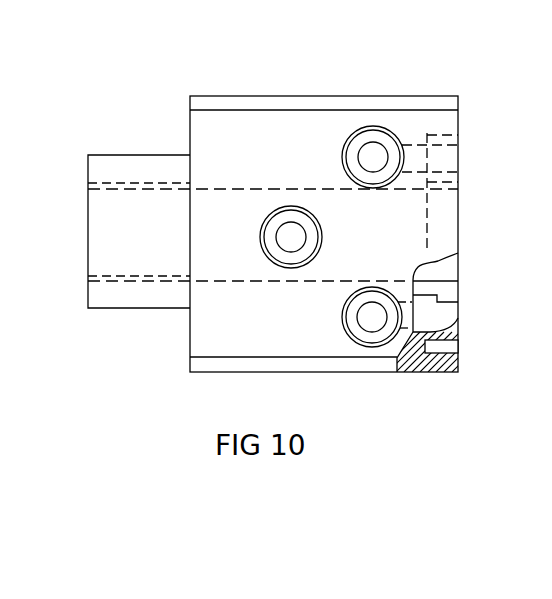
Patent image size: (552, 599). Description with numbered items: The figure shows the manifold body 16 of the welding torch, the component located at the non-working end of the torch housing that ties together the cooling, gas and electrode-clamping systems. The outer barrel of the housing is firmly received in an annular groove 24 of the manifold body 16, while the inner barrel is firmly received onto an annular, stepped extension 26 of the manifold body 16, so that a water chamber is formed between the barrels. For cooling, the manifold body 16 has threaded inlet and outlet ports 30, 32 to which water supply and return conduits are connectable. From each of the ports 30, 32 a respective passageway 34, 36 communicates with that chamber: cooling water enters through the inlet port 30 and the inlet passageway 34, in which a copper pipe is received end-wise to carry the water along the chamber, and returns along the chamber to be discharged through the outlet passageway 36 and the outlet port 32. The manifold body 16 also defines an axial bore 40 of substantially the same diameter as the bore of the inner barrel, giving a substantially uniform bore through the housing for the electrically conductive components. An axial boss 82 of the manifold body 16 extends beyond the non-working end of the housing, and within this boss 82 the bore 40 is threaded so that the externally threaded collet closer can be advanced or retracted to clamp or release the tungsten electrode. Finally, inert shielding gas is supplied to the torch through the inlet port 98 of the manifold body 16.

The manifold body 16 is at (267, 95).
The annular groove 24 is at (447, 350).
The annular, stepped extension 26 is at (448, 286).
The inlet port 30 is at (362, 346).
The outlet port 32 is at (359, 130).
The inlet passageway 34 is at (450, 320).
The outlet passageway 36 is at (451, 148).
The axial bore 40 is at (133, 190).
The axial boss 82 is at (152, 292).
The inlet port 98 is at (284, 268).